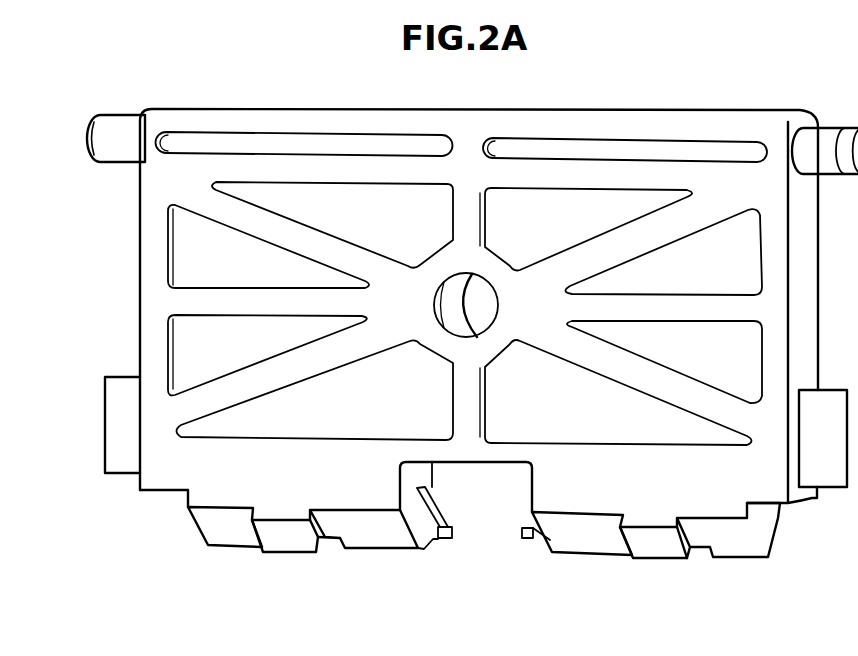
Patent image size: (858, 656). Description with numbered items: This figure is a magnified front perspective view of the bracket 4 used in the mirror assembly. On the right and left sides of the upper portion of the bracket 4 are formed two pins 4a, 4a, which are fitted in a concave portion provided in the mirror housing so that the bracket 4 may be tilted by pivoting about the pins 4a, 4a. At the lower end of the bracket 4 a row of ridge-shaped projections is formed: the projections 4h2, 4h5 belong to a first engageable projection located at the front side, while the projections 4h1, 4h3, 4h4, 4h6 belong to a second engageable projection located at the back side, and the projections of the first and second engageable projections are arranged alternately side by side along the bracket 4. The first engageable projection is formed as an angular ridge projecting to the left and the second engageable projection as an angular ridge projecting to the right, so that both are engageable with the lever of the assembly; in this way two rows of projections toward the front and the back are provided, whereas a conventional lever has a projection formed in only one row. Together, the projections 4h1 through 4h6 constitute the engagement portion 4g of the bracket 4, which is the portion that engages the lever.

The bracket 4 is at (543, 218).
The pins 4a is at (125, 142).
The engagement portion 4g is at (768, 598).
The projection of second engageable projection 4h1 is at (232, 535).
The projection of first engageable projection 4h2 is at (293, 540).
The projection of second engageable projection 4h3 is at (382, 537).
The projection of second engageable projection 4h4 is at (582, 537).
The projection of first engageable projection 4h5 is at (655, 547).
The projection of second engageable projection 4h6 is at (732, 538).